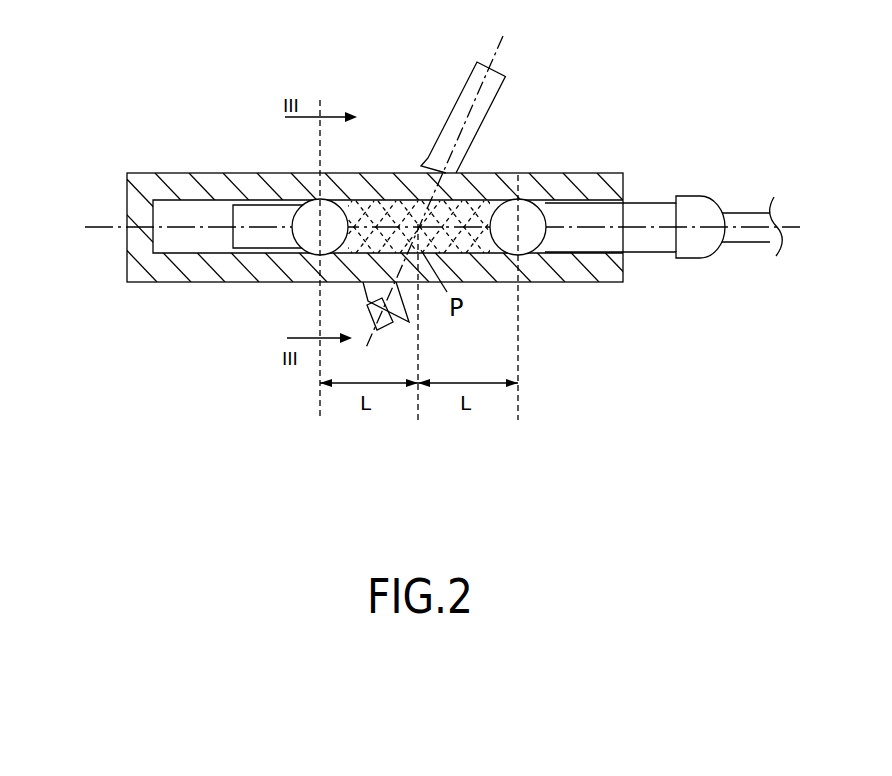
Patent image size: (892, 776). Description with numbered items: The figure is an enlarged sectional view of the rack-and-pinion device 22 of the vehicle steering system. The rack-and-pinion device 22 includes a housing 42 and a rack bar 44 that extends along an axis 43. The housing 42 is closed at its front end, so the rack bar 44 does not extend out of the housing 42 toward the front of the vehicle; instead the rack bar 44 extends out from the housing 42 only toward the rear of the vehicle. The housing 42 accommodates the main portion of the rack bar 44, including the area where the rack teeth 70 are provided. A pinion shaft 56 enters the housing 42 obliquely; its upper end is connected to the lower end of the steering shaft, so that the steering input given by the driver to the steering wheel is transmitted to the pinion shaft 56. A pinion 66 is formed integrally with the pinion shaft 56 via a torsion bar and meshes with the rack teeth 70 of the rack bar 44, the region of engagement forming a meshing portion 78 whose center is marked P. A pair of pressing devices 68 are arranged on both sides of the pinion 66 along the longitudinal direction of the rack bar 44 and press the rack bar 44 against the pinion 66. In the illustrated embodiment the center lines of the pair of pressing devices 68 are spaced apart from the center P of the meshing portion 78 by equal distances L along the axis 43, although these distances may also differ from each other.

The rack-and-pinion device 22 is at (610, 154).
The housing 42 is at (177, 172).
The axis 43 is at (93, 226).
The rack bar 44 is at (652, 248).
The pinion shaft 56 is at (488, 118).
The pinion 66 is at (409, 316).
The pressing devices 68 is at (300, 248).
The rack teeth 70 is at (468, 258).
The meshing portion 78 is at (413, 202).